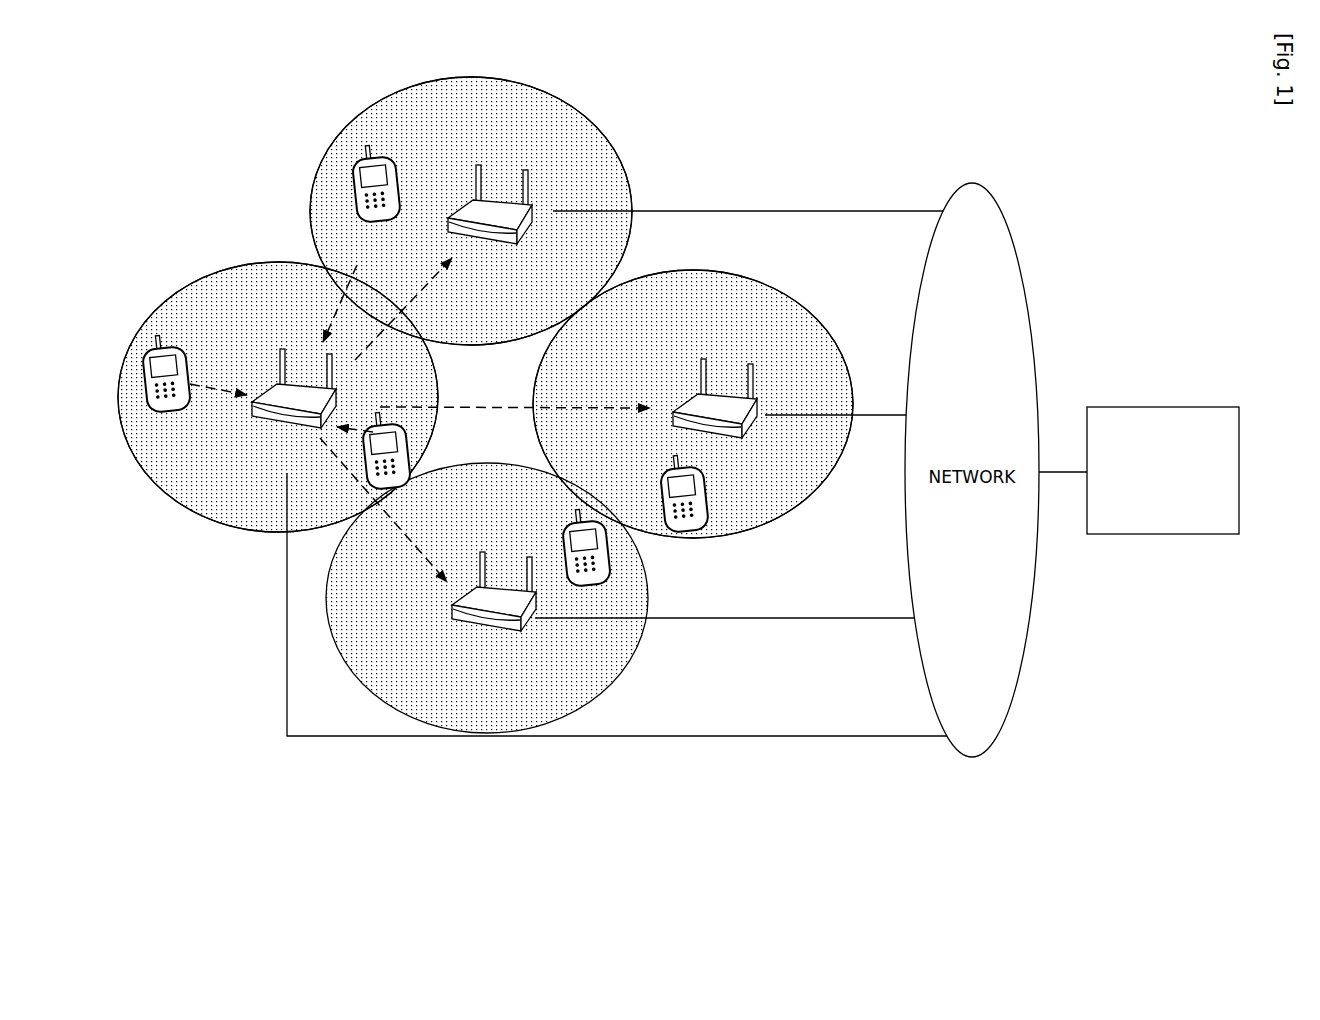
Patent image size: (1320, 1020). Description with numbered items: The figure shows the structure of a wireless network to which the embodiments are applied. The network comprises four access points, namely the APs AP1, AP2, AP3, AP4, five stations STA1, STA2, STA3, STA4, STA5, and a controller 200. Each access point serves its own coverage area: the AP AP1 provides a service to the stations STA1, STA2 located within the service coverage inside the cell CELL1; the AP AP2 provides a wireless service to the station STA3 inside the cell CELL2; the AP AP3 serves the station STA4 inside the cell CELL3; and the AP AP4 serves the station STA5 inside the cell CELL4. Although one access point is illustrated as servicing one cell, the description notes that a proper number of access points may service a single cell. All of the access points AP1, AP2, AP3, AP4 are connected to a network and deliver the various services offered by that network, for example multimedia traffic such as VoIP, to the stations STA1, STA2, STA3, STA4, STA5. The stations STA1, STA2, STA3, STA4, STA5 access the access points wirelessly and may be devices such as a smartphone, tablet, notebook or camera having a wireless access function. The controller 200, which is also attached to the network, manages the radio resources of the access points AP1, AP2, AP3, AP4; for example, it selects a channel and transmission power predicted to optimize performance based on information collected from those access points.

The controller 200 is at (1138, 407).
The AP AP1 is at (294, 401).
The AP AP2 is at (494, 601).
The AP AP3 is at (715, 407).
The AP AP4 is at (490, 218).
The station STA1 is at (165, 387).
The station STA2 is at (412, 450).
The station STA3 is at (612, 547).
The station STA4 is at (711, 493).
The station STA5 is at (374, 197).
The cell CELL1 is at (278, 407).
The cell CELL2 is at (506, 598).
The cell CELL3 is at (696, 404).
The cell CELL4 is at (478, 211).